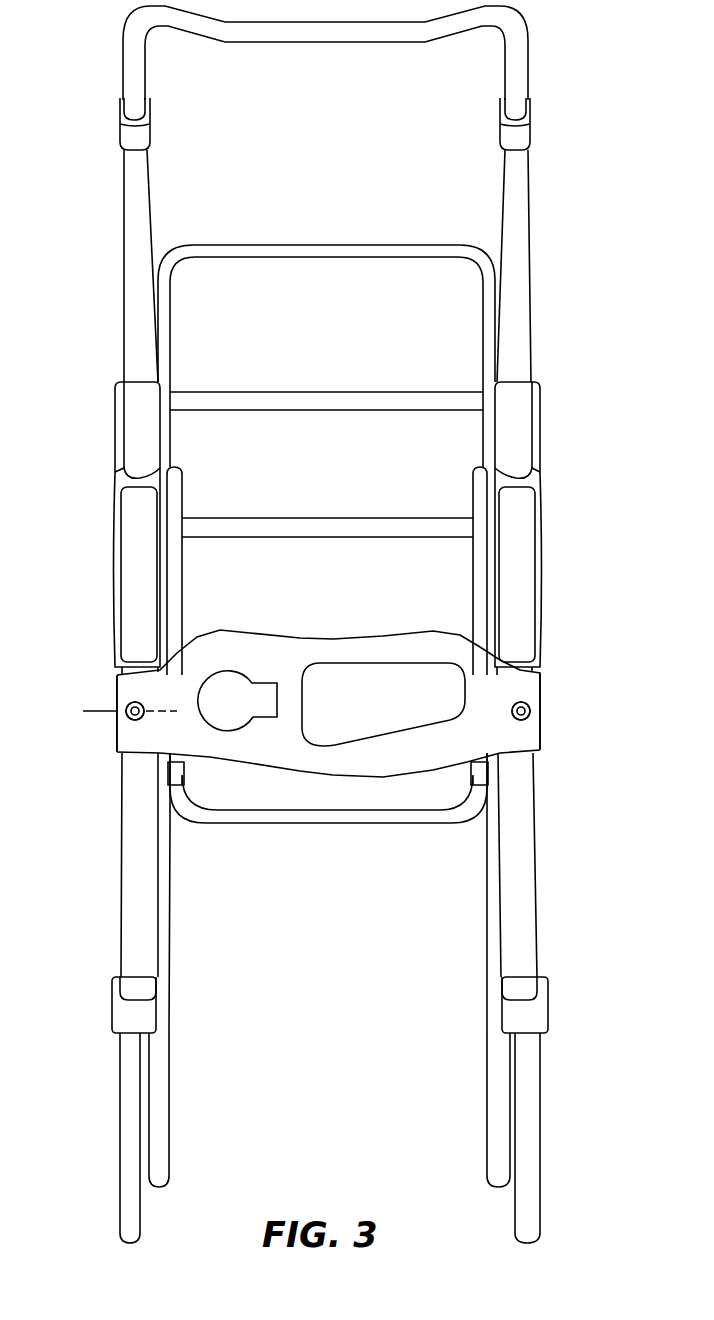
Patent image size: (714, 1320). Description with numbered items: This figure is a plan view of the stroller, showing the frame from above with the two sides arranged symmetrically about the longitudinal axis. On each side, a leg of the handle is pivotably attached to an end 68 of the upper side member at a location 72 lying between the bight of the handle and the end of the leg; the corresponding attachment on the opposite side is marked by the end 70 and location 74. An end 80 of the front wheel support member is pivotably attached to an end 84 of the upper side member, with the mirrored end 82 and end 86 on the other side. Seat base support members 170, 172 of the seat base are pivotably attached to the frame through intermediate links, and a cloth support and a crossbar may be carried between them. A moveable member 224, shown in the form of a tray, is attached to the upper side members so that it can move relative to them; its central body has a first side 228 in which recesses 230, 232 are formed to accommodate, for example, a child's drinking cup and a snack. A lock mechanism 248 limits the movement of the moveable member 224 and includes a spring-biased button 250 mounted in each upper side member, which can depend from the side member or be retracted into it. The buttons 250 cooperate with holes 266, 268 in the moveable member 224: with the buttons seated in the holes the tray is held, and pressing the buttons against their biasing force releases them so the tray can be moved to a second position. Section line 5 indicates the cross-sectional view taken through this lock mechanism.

The section line 5 is at (88, 712).
The end of upper side member 68 is at (112, 485).
The right lower bracket 70 is at (543, 485).
The location 72 is at (110, 430).
The right upper bracket 74 is at (545, 430).
The end of front wheel support member 80 is at (112, 1038).
The right leg 82 is at (546, 1038).
The end of upper side member 84 is at (110, 977).
The right leg collar 86 is at (548, 977).
The seat base support member 170 is at (160, 556).
The seat base support member 172 is at (497, 553).
The moveable member 224 is at (334, 704).
The first side 228 is at (320, 772).
The recess 230 is at (233, 688).
The recess 232 is at (363, 688).
The lock mechanism 248 is at (118, 692).
The button 250 is at (532, 712).
The hole 266 is at (132, 718).
The hole 268 is at (530, 720).